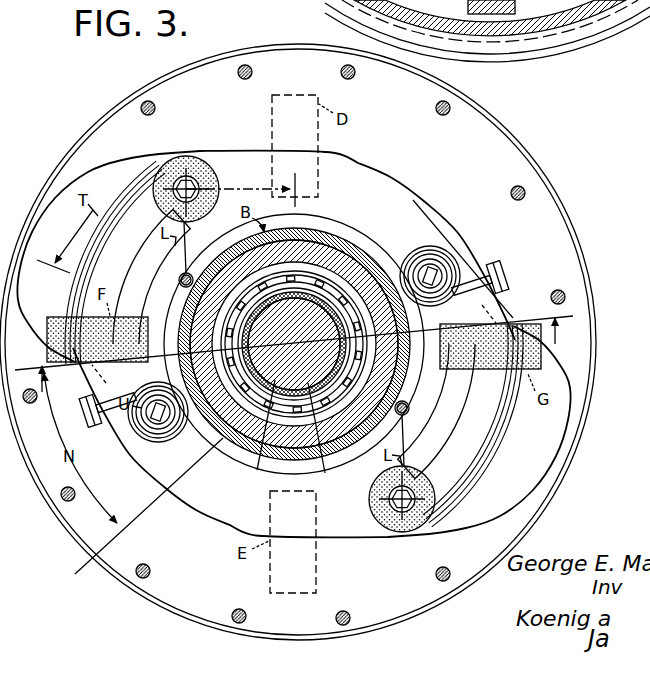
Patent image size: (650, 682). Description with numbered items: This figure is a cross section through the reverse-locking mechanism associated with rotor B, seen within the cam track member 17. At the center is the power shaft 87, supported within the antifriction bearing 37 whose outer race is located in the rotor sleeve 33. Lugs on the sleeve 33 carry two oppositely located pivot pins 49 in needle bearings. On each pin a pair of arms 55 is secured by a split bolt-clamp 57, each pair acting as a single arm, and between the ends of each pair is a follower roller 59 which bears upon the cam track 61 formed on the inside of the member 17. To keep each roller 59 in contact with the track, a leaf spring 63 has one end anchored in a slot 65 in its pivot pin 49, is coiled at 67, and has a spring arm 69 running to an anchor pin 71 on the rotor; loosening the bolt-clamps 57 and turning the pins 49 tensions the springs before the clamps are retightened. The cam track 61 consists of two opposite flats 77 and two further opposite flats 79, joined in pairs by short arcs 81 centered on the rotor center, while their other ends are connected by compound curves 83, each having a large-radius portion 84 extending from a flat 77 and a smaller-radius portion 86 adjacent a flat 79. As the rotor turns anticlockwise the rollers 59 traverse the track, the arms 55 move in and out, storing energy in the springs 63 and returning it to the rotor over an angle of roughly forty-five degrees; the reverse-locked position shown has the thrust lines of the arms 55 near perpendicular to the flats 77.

The cam track member 17 is at (505, 153).
The sleeve 33 is at (336, 228).
The antifriction bearing 37 is at (322, 464).
The pivot pin 49 is at (113, 432).
The arm 55 is at (129, 266).
The split bolt-clamp 57 is at (481, 273).
The follower roller 59 is at (193, 152).
The cam track 61 is at (339, 156).
The leaf spring 63 is at (425, 247).
The spring anchor slot 65 is at (419, 250).
The spring coil 67 is at (430, 300).
The spring arm 69 is at (179, 281).
The anchor pin 71 is at (183, 273).
The flat 77 is at (240, 154).
The flat 79 is at (441, 233).
The short arc 81 is at (389, 178).
The compound curve 83 is at (88, 171).
The large-radius portion 84 is at (45, 208).
The small-radius portion 86 is at (19, 299).
The power shaft 87 is at (257, 470).